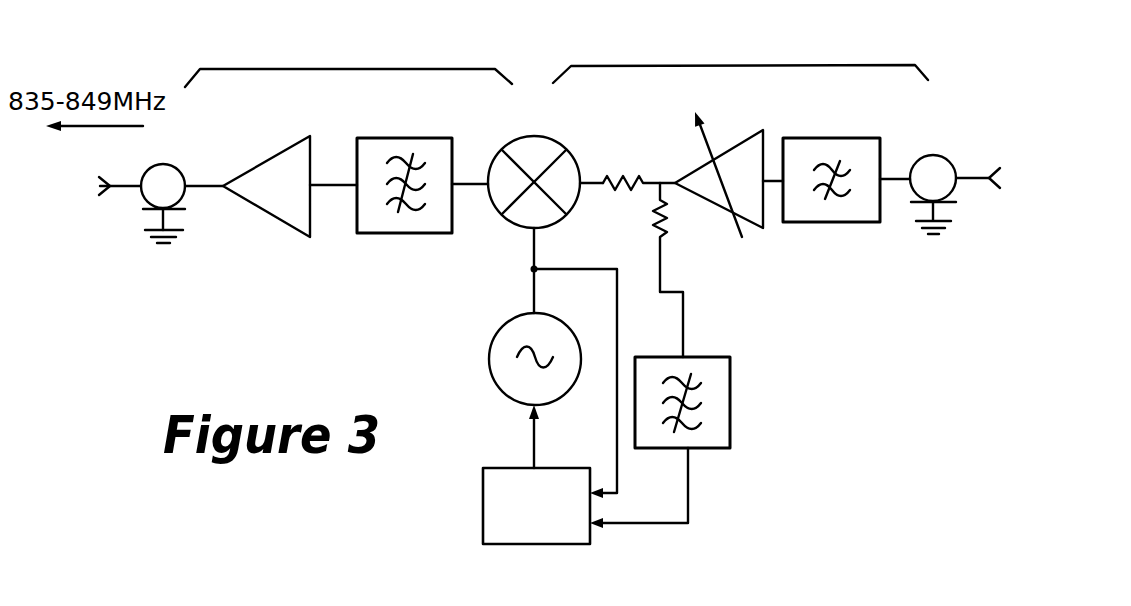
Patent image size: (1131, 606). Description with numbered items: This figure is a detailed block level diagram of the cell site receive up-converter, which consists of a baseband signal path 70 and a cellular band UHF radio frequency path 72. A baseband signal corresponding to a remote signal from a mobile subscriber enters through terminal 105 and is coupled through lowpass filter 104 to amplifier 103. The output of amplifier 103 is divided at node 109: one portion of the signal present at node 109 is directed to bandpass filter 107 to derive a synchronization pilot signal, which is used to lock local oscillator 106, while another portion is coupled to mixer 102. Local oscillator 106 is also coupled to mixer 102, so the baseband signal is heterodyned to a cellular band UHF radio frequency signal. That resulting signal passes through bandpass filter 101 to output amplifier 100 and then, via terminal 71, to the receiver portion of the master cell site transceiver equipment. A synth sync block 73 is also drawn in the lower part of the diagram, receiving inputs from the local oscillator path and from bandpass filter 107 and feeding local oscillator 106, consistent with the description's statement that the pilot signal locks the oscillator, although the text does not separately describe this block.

The baseband signal path 70 is at (757, 65).
The terminal 71 is at (104, 187).
The cellular band UHF radio frequency path 72 is at (384, 69).
The synthesizer sync unit 73 is at (483, 505).
The output amplifier 100 is at (283, 212).
The bandpass filter 101 is at (372, 146).
The mixer 102 is at (522, 218).
The amplifier 103 is at (700, 178).
The lowpass filter 104 is at (802, 222).
The terminal 105 is at (1003, 172).
The local oscillator 106 is at (502, 338).
The bandpass filter 107 is at (730, 382).
The node 109 is at (668, 186).